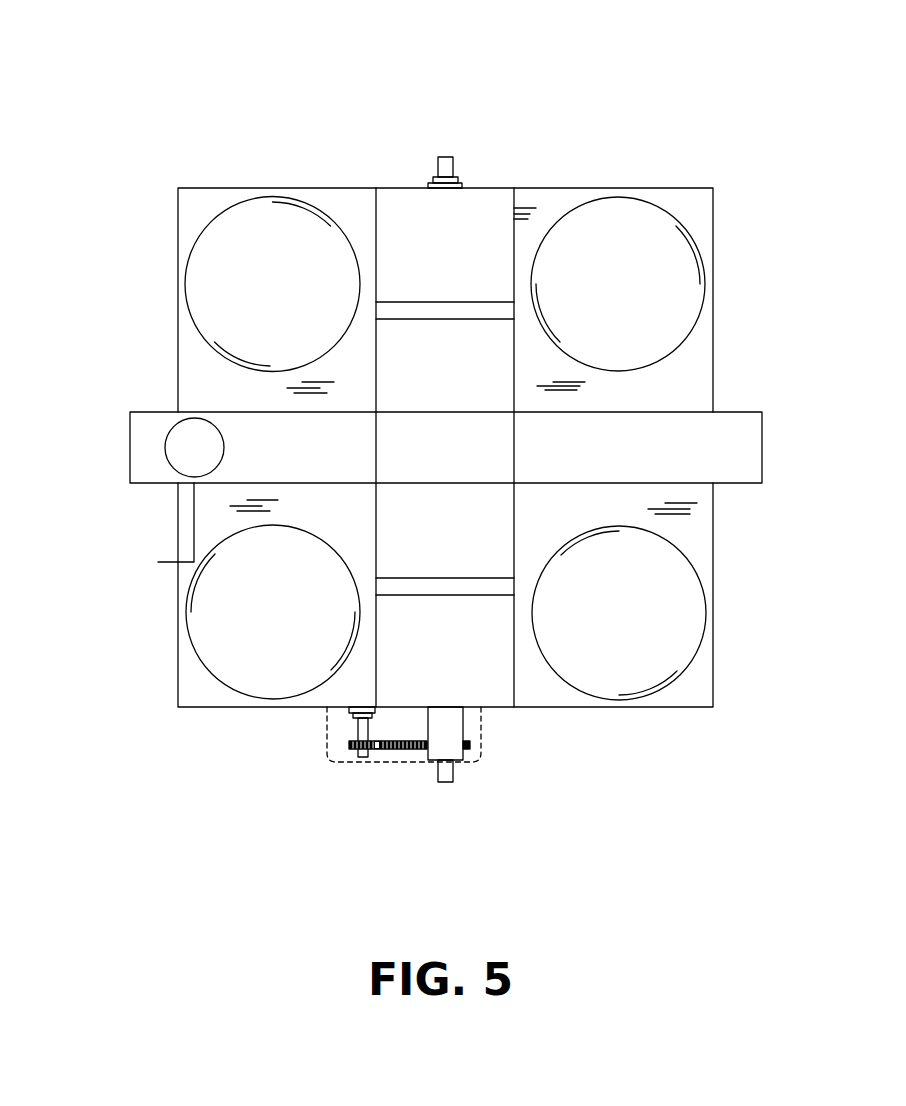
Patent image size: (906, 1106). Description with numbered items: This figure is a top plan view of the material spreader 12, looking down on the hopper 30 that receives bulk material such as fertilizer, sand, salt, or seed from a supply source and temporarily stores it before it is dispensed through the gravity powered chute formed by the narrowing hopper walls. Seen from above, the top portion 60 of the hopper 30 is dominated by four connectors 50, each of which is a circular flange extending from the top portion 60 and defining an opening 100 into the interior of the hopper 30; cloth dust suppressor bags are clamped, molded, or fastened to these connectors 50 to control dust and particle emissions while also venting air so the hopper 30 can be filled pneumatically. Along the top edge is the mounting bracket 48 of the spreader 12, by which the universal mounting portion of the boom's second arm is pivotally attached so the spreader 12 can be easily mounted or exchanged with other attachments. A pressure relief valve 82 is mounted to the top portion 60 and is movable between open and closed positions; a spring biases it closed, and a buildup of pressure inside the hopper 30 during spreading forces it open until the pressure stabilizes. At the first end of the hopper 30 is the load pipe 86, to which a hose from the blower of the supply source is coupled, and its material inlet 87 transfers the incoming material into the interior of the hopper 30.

The spreader 12 is at (213, 133).
The hopper 30 is at (693, 376).
The mounting bracket 48 is at (492, 188).
The connector 50 is at (185, 283).
The top portion 60 is at (460, 461).
The pressure relief valve 82 is at (175, 449).
The load pipe 86 is at (458, 723).
The material inlet 87 is at (446, 766).
The opening 100 is at (288, 300).